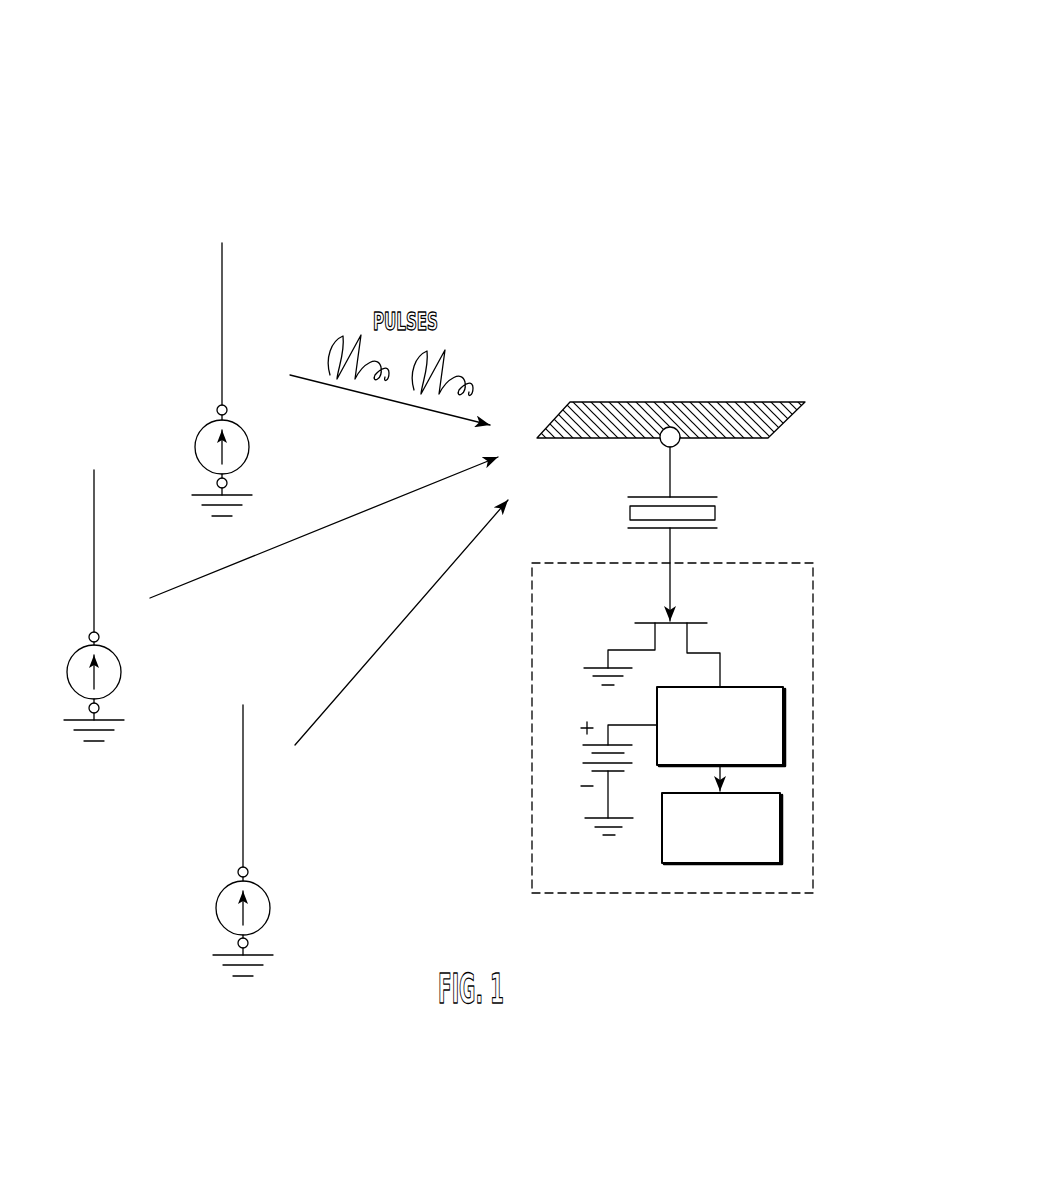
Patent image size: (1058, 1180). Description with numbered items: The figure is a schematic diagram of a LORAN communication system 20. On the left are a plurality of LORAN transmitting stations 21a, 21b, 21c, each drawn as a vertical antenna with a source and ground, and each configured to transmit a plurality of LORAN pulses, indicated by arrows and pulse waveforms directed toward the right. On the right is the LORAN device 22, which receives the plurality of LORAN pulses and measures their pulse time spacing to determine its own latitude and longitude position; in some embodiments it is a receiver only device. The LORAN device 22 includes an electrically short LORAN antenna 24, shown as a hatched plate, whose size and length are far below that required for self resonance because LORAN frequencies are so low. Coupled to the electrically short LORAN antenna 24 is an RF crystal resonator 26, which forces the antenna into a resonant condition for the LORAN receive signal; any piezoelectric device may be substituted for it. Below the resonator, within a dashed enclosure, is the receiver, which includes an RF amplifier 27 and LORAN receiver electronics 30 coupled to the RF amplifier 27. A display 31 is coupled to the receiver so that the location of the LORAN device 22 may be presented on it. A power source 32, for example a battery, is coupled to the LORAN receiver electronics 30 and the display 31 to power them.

The LORAN communication system 20 is at (714, 128).
The LORAN transmitting station 21a is at (222, 290).
The LORAN transmitting station 21b is at (94, 497).
The LORAN transmitting station 21c is at (243, 757).
The LORAN device 22 is at (879, 441).
The electrically short LORAN antenna 24 is at (775, 401).
The RF crystal resonator 26 is at (717, 513).
The RF amplifier 27 is at (707, 623).
The LORAN receiver electronics 30 is at (783, 713).
The display 31 is at (780, 820).
The power source 32 is at (577, 757).